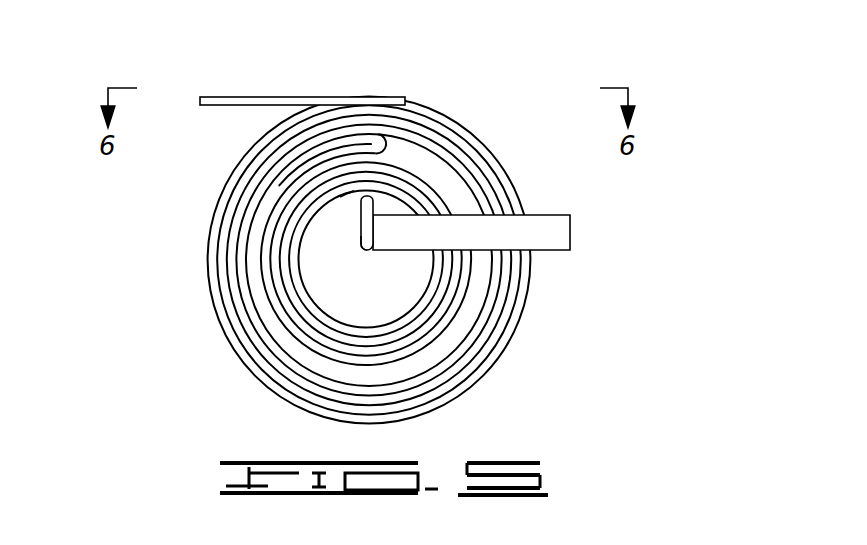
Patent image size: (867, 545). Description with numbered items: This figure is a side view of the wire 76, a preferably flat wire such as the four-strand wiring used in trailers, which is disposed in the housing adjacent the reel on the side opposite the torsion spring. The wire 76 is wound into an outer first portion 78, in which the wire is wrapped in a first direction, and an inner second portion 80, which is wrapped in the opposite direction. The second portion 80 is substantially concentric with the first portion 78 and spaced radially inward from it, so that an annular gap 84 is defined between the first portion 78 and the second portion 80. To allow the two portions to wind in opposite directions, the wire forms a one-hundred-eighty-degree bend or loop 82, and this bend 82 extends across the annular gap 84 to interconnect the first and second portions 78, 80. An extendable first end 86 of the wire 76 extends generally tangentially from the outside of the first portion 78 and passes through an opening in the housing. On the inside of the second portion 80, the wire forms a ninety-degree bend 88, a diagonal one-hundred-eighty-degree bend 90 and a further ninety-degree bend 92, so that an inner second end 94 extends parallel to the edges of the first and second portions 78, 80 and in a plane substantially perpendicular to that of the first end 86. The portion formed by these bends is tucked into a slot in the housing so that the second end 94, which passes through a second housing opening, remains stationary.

The wire 76 is at (440, 234).
The outer first portion 78 is at (483, 343).
The inner second portion 80 is at (393, 343).
The 180° bend 82 is at (388, 140).
The annular gap 84 is at (285, 342).
The extendable first end 86 is at (245, 97).
The 90° bend 88 is at (362, 228).
The diagonal 180° bend 90 is at (362, 243).
The 90° bend 92 is at (362, 197).
The inner second end 94 is at (570, 228).